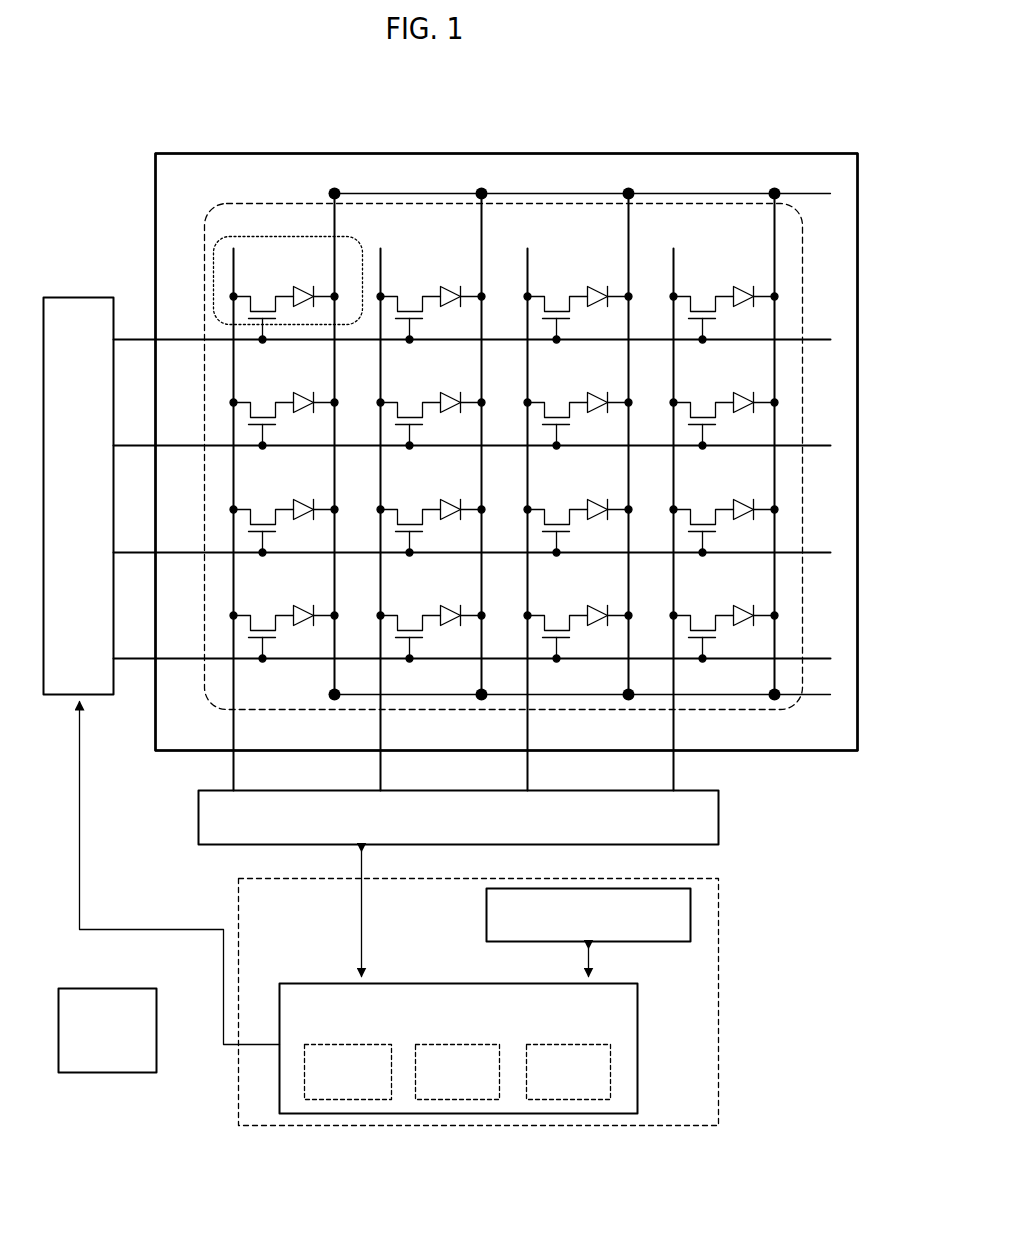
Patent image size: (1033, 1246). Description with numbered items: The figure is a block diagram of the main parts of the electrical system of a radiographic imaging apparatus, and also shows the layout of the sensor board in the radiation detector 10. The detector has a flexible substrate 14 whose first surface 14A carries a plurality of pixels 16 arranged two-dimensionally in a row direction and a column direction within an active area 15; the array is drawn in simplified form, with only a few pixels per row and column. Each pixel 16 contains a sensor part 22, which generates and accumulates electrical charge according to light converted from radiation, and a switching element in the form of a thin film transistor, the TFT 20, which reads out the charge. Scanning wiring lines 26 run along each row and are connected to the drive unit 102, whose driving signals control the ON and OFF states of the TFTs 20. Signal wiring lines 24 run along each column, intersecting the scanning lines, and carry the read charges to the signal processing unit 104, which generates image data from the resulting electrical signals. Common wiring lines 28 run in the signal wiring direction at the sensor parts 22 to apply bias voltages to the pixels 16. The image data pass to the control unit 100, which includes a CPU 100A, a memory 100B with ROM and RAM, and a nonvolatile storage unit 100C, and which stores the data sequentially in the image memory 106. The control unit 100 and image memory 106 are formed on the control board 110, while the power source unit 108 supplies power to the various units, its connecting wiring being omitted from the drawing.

The radiation detector 10 is at (712, 152).
The flexible substrate 14 is at (507, 452).
The first surface 14A is at (802, 163).
The active area 15 is at (204, 252).
The pixel 16 is at (213, 287).
The switching element (TFT) 20 is at (266, 320).
The sensor part 22 is at (297, 290).
The signal wiring line 24 is at (235, 722).
The scanning wiring line 26 is at (812, 336).
The common wiring line 28 is at (334, 216).
The drive unit 102 is at (73, 296).
The signal processing unit 104 is at (718, 825).
The image memory 106 is at (665, 941).
The control unit 100 is at (637, 1062).
The central processing unit (CPU) 100A is at (339, 1043).
The memory 100B is at (462, 1043).
The storage unit 100C is at (564, 1043).
The power source unit 108 is at (110, 1072).
The control board 110 is at (718, 997).